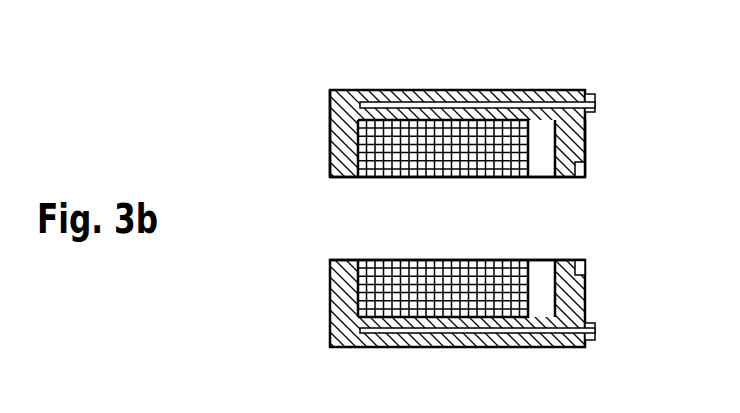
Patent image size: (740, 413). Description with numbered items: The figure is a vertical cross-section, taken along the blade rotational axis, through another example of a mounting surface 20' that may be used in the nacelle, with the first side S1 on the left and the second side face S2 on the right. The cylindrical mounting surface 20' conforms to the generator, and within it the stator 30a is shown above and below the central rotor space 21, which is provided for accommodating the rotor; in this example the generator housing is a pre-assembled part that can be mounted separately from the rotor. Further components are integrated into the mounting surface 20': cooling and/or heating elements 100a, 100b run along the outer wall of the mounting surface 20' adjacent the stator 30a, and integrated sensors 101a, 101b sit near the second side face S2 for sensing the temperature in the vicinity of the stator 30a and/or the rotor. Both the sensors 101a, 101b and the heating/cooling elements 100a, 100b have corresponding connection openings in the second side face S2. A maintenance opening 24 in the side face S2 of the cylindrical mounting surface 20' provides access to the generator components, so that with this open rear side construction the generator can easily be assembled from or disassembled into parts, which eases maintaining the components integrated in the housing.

The rotor space 21 is at (447, 232).
The maintenance opening 24 is at (570, 218).
The cooling and/or heating element 100a is at (455, 100).
The cooling and/or heating element 100b is at (453, 340).
The mounting surface 20' is at (477, 188).
The stator 30a is at (386, 146).
The integrated sensor 101a is at (580, 170).
The integrated sensor 101b is at (583, 268).
The side S1 is at (330, 109).
The second side face S2 is at (587, 131).